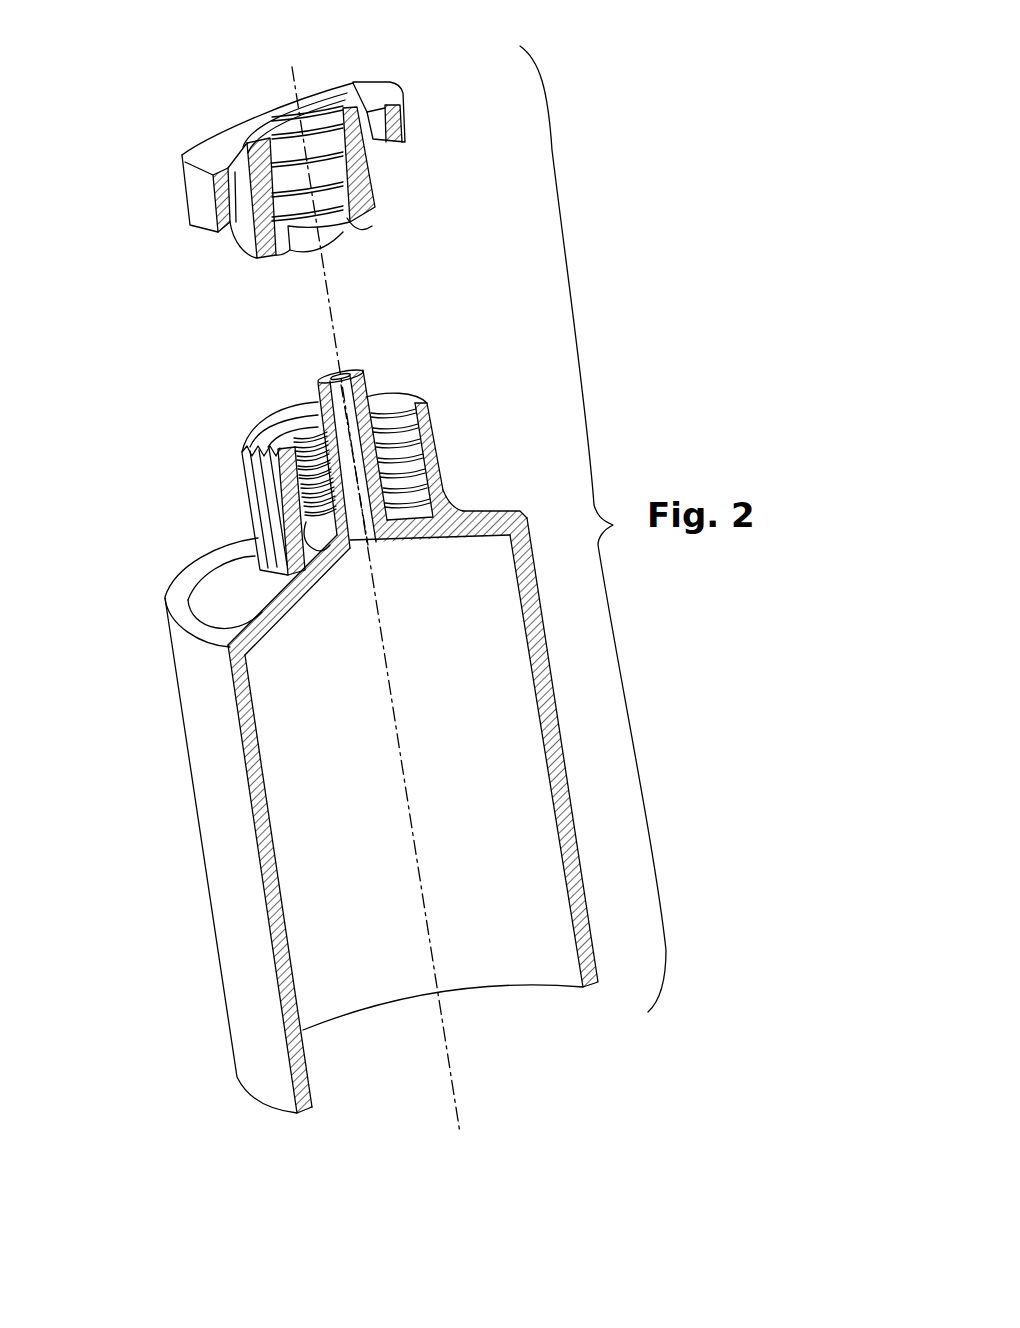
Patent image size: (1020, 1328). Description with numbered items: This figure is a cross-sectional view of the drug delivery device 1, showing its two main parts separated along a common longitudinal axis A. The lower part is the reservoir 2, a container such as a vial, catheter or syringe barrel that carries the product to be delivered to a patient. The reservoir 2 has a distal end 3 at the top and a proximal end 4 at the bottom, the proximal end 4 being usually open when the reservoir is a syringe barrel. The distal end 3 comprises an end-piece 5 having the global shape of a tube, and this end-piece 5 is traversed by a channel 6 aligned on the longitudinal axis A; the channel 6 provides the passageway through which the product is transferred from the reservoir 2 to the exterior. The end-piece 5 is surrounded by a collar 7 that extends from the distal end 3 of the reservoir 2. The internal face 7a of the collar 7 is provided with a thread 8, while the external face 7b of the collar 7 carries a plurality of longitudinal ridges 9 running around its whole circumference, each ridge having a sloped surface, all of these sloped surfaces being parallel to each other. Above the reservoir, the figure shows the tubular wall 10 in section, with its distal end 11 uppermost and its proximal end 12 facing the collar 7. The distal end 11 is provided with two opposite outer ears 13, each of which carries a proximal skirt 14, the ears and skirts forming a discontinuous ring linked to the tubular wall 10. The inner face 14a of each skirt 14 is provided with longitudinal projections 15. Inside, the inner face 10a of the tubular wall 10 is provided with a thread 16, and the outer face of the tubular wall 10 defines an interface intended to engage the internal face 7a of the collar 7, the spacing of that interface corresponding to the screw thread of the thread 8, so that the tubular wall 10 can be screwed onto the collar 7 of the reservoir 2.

The drug delivery device 1 is at (170, 412).
The reservoir 2 is at (200, 928).
The distal end 3 is at (497, 500).
The proximal end 4 is at (305, 1117).
The end-piece 5 is at (364, 392).
The channel 6 is at (355, 412).
The collar 7 is at (443, 431).
The internal face 7a is at (413, 508).
The external face 7b is at (433, 418).
The thread 8 is at (293, 428).
The longitudinal ridges 9 is at (256, 498).
The tubular wall 10 is at (383, 197).
The inner face 10a is at (300, 226).
The distal end 11 is at (257, 106).
The proximal end 12 is at (365, 231).
The outer ears 13 is at (407, 97).
The proximal skirt 14 is at (402, 128).
The inner face 14a is at (243, 210).
The longitudinal projections 15 is at (375, 150).
The thread 16 is at (313, 158).
The longitudinal axis A is at (447, 1052).